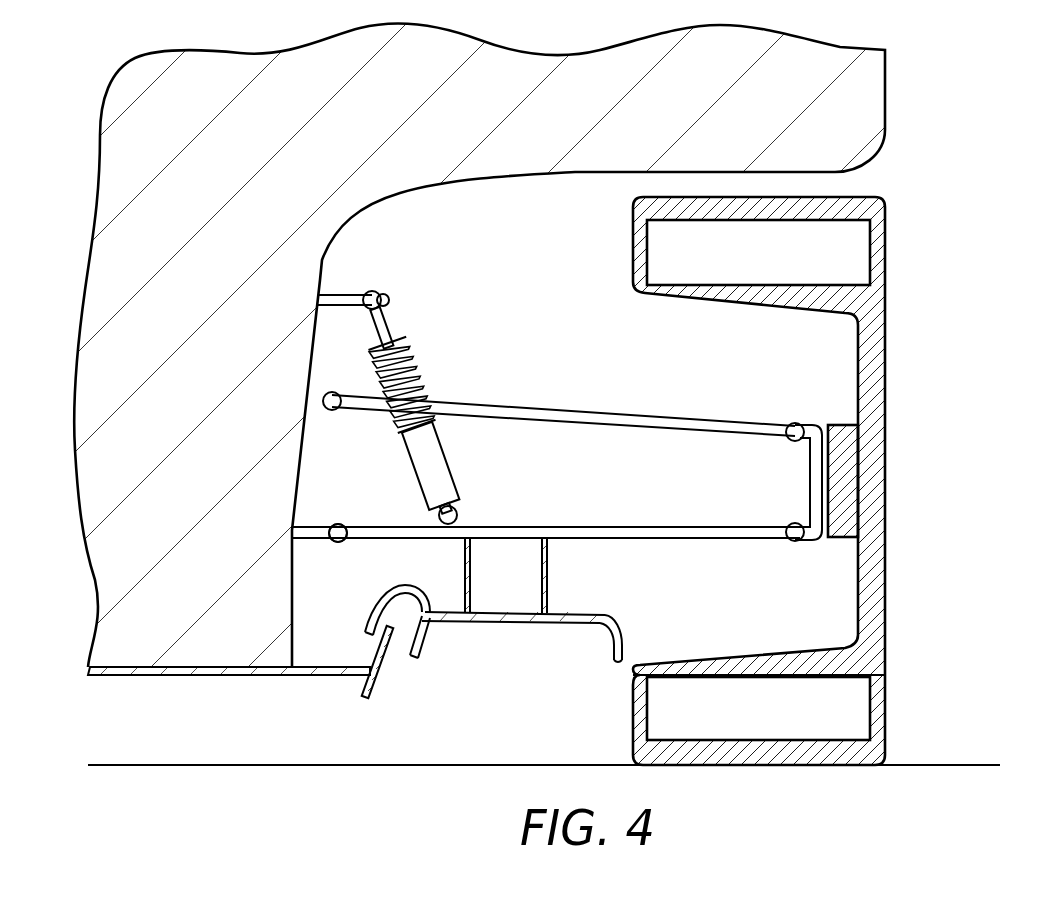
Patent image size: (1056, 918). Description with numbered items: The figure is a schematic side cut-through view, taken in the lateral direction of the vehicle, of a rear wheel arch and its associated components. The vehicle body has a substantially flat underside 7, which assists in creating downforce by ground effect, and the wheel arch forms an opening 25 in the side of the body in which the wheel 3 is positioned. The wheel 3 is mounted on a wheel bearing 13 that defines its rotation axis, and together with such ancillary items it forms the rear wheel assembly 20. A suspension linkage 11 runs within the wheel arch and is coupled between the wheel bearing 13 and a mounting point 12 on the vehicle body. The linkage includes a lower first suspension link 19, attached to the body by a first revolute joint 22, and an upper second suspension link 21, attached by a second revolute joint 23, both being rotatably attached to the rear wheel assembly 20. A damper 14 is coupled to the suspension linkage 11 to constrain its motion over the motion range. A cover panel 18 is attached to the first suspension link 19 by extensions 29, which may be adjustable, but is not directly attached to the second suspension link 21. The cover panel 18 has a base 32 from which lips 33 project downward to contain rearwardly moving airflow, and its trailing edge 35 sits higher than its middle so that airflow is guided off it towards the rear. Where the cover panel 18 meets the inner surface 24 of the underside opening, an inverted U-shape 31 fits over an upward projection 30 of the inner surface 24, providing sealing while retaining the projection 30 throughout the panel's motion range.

The opening in the side of the vehicle body 25 is at (877, 183).
The wheel 3 is at (885, 240).
The underside 7 is at (200, 678).
The rear wheel assembly 20 is at (528, 459).
The wheel bearing 13 is at (850, 482).
The suspension linkage 11 is at (575, 382).
The damper 14 is at (403, 352).
The second suspension link 21 is at (665, 412).
The first suspension link 19 is at (508, 525).
The mounting point 12 is at (308, 401).
The first revolute joint 22 is at (337, 522).
The second revolute joint 23 is at (795, 545).
The extensions 29 is at (549, 568).
The base 32 is at (524, 624).
The cover panel 18 is at (598, 620).
The trailing edge 35 is at (622, 664).
The inverted U-shape 31 is at (392, 597).
The lips 33 is at (420, 650).
The projection 30 is at (391, 648).
The inner surface 24 is at (372, 688).